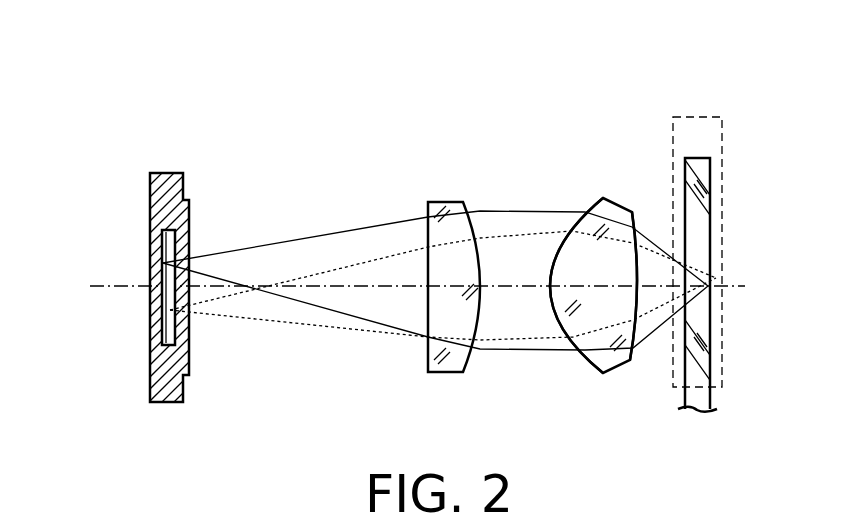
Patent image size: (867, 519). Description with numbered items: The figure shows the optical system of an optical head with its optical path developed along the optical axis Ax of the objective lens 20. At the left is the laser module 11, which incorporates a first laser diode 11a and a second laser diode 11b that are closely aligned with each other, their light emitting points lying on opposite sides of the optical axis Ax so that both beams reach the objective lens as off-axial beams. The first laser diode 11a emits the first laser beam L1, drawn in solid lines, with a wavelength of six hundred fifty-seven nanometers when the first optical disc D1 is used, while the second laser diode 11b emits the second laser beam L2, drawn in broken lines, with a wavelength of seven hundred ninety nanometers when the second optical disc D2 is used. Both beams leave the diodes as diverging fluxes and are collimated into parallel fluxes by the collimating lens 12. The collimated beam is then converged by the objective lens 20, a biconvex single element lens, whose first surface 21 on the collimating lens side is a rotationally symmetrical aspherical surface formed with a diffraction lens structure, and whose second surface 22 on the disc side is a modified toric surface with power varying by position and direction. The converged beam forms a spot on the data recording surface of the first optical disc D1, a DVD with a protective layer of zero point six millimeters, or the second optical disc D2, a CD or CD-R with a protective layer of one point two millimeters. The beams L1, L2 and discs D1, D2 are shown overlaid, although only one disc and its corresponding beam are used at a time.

The laser module 11 is at (158, 198).
The first laser diode 11a is at (165, 263).
The second laser diode 11b is at (170, 310).
The collimating lens 12 is at (443, 258).
The objective lens 20 is at (597, 208).
The first surface 21 is at (553, 317).
The second surface 22 is at (647, 330).
The first laser beam L1 is at (285, 243).
The second laser beam L2 is at (283, 323).
The optical axis Ax is at (392, 288).
The first optical disc D1 is at (695, 402).
The second optical disc D2 is at (698, 120).